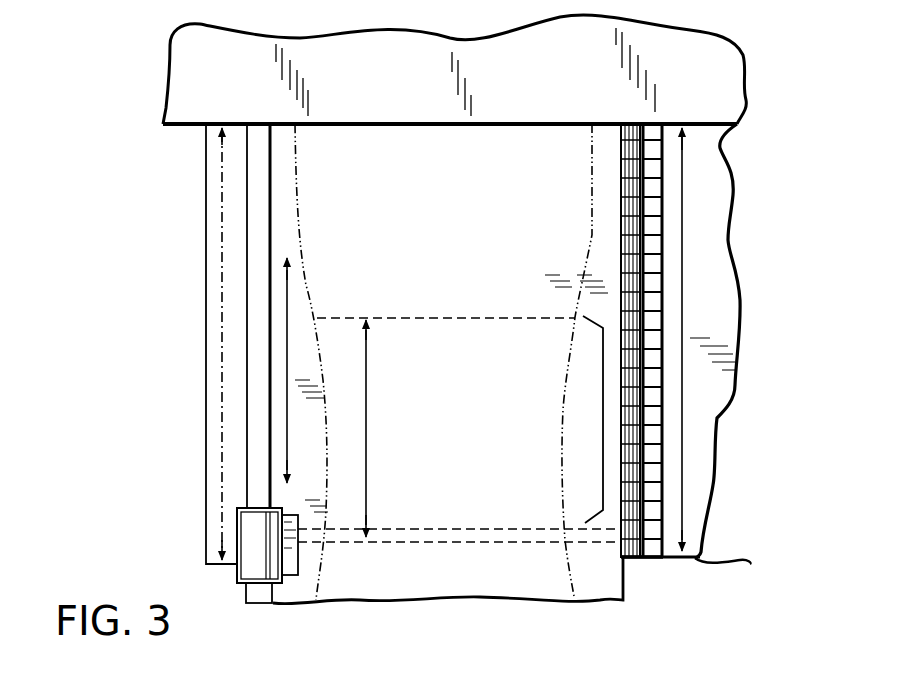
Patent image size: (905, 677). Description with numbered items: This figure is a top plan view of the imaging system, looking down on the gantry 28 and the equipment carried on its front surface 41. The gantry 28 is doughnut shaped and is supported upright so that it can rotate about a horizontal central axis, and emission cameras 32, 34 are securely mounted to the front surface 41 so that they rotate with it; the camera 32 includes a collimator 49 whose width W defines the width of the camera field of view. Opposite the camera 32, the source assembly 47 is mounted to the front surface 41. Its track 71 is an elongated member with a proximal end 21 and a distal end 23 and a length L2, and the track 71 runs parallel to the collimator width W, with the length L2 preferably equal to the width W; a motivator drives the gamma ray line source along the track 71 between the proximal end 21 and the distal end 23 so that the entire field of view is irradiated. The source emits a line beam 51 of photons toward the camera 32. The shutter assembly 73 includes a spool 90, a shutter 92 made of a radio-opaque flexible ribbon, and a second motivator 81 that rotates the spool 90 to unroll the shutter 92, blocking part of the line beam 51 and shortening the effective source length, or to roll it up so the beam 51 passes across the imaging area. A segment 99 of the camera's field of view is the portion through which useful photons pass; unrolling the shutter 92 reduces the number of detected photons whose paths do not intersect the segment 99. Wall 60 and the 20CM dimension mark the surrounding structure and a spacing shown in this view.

The gantry 28 is at (707, 82).
The front surface 41 is at (708, 124).
The emission camera 32 is at (737, 571).
The floor 60 is at (297, 603).
The proximal end 21 is at (205, 150).
The source assembly 47 is at (197, 442).
The track 71 is at (214, 223).
The length L2 is at (220, 287).
The distal end 23 is at (207, 512).
The line beam 51 is at (400, 537).
The spool 90 is at (568, 384).
The segment 99 is at (603, 431).
The emission camera 34 is at (632, 558).
The collimator 49 is at (653, 558).
The width W is at (683, 335).
The dimension 20 cm 20CM is at (366, 405).
The shutter assembly 73 is at (250, 568).
The shutter 92 is at (293, 553).
The second motivator 81 is at (250, 603).